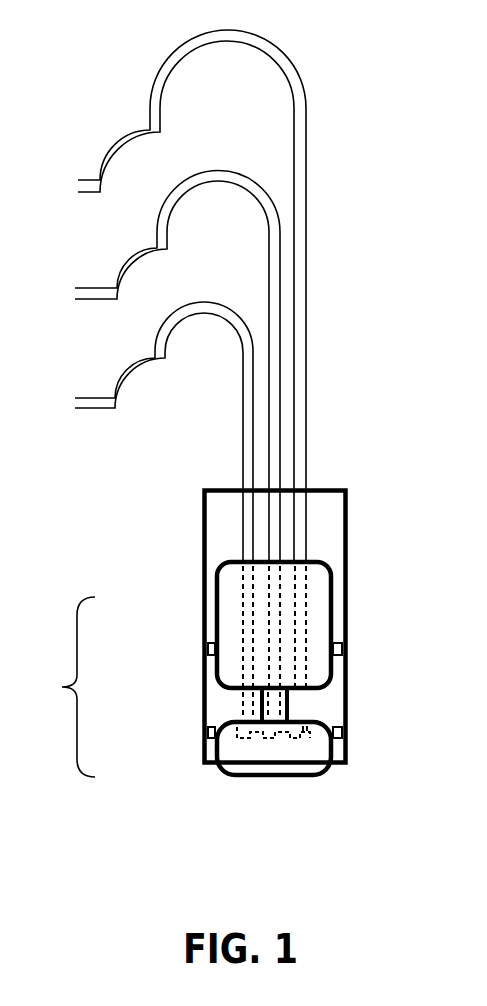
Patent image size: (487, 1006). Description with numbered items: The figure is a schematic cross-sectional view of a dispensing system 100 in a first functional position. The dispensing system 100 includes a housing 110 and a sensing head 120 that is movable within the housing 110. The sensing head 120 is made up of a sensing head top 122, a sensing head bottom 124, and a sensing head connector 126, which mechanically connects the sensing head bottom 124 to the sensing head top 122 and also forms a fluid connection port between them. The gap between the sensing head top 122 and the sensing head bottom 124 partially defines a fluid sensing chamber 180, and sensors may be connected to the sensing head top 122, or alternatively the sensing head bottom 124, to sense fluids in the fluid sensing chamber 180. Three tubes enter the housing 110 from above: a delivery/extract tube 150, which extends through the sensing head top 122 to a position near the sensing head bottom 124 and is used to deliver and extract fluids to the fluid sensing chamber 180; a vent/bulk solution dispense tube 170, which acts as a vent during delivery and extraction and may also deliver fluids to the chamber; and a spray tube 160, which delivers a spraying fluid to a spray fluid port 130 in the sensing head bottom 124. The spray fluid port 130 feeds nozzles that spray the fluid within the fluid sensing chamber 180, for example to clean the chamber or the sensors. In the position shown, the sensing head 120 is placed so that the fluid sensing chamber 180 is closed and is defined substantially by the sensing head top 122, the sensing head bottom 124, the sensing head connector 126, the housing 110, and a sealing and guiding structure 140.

The dispensing system 100 is at (328, 418).
The housing 110 is at (202, 513).
The sensing head 120 is at (57, 687).
The sensing head top 122 is at (215, 598).
The sensing head bottom 124 is at (215, 748).
The sensing head connector 126 is at (257, 710).
The spray fluid port 130 is at (293, 740).
The sealing and guiding structure 140 is at (350, 647).
The delivery/extract tube 150 is at (250, 520).
The spray tube 160 is at (277, 548).
The vent/bulk solution dispense tube 170 is at (302, 580).
The fluid sensing chamber 180 is at (333, 708).